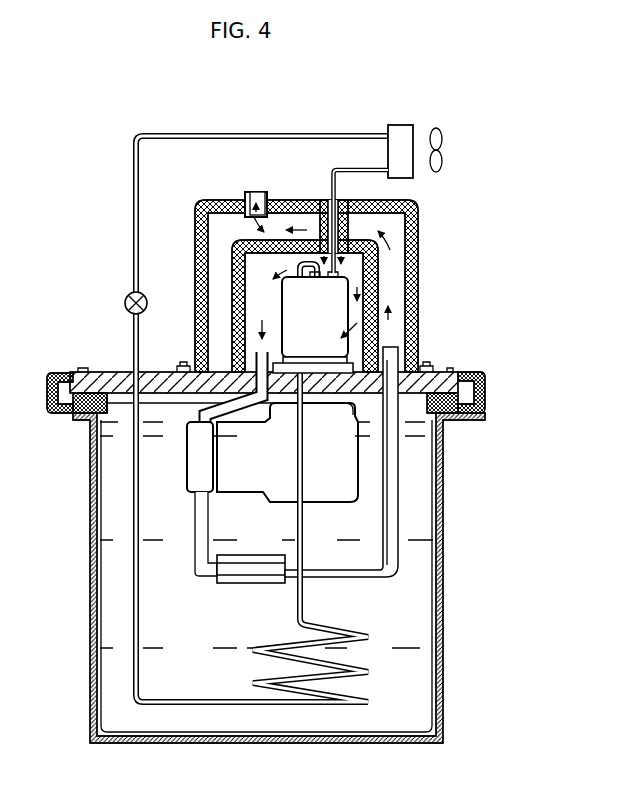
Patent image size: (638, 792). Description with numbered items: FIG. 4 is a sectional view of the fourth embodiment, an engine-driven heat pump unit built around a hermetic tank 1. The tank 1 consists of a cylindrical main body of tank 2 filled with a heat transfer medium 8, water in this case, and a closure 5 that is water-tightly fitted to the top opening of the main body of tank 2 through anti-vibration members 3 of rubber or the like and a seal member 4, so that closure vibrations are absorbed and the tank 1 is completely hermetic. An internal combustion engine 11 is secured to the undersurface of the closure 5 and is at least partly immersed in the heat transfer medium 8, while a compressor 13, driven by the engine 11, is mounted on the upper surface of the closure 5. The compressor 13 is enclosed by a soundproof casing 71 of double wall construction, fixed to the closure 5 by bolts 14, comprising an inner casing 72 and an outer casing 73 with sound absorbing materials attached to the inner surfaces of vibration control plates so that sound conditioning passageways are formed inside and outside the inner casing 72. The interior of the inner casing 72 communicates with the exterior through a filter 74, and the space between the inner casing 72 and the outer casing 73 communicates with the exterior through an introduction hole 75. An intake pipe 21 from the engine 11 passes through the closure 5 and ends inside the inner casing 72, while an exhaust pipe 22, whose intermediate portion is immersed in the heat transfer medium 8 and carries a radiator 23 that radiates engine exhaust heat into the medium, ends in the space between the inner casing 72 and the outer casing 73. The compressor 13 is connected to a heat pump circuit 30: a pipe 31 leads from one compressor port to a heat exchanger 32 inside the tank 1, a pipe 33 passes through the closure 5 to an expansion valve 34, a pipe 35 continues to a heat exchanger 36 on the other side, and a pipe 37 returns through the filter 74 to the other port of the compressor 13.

The tank 1 is at (470, 616).
The main body of tank 2 is at (442, 672).
The anti-vibration members 3 is at (73, 404).
The seal member 4 is at (52, 373).
The closure 5 is at (441, 372).
The heat transfer medium 8 is at (432, 530).
The internal combustion engine 11 is at (336, 502).
The compressor 13 is at (282, 298).
The bolts 14 is at (182, 366).
The intake pipe 21 is at (236, 421).
The exhaust pipe 22 is at (354, 583).
The radiator 23 is at (246, 583).
The heat pump circuit 30 is at (285, 131).
The pipe 31 is at (298, 524).
The heat exchanger 32 is at (372, 668).
The pipe 33 is at (140, 618).
The expansion valve 34 is at (124, 303).
The pipe 35 is at (188, 140).
The heat exchanger 36 is at (400, 128).
The pipe 37 is at (331, 180).
The soundproof casing 71 is at (442, 237).
The inner casing 72 is at (368, 268).
The outer casing 73 is at (418, 304).
The filter 74 is at (342, 203).
The introduction hole 75 is at (247, 191).